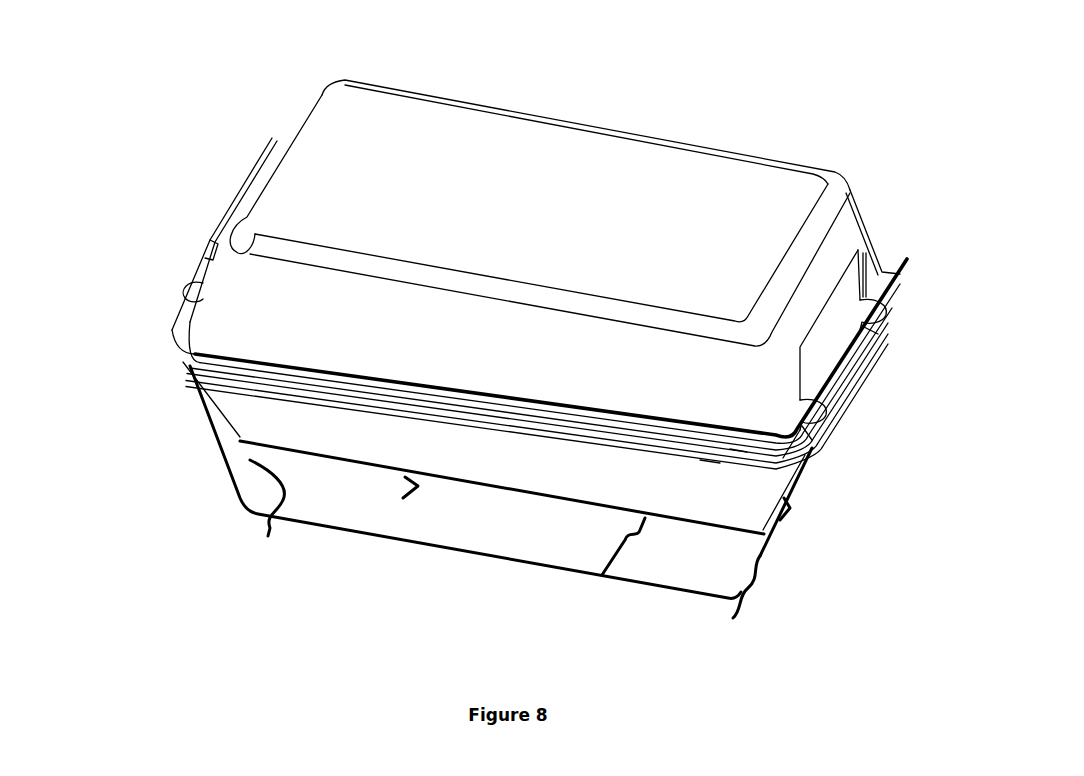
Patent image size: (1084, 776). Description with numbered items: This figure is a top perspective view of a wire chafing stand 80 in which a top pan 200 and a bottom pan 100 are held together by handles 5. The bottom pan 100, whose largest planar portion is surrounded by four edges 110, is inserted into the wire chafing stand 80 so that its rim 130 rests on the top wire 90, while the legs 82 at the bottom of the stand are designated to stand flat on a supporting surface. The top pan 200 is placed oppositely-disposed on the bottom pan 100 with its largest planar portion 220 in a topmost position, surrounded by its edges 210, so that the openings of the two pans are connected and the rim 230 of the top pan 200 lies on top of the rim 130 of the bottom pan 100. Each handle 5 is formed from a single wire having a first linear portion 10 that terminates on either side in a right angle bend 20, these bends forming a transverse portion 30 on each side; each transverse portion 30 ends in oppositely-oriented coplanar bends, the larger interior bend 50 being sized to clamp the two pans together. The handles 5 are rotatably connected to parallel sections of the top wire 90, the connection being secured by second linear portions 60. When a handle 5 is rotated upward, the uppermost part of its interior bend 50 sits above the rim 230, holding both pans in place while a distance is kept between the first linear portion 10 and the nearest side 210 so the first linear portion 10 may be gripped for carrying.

The handle 5 is at (253, 163).
The first linear portion 10 is at (240, 190).
The right angle bend 20 is at (268, 140).
The transverse portion 30 is at (207, 253).
The interior bend 50 is at (190, 290).
The second linear portion 60 is at (880, 332).
The wire chafing stand 80 is at (223, 470).
The legs 82 is at (263, 533).
The top wire 90 is at (557, 437).
The bottom pan 100 is at (278, 405).
The edges 110 is at (243, 397).
The rim 130 is at (720, 463).
The top pan 200 is at (375, 113).
The edges 210 is at (840, 247).
The largest planar portion 220 is at (597, 155).
The rim 230 is at (747, 452).